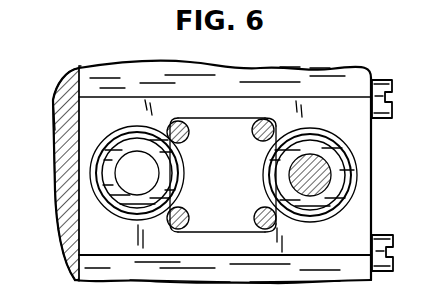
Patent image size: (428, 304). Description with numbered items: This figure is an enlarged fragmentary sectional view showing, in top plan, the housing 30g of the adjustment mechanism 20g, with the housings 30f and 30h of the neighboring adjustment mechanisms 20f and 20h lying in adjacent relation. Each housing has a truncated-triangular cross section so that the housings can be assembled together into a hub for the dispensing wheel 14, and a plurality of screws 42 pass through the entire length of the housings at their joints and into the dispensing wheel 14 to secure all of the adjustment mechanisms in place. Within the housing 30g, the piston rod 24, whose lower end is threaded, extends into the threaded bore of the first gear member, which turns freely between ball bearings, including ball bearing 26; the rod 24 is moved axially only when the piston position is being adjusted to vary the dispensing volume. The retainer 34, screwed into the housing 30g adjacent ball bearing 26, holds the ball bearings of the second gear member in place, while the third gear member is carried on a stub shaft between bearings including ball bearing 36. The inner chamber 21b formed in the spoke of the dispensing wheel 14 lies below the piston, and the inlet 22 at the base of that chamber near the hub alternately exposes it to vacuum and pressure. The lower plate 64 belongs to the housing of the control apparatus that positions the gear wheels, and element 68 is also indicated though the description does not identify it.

The dispensing wheel 14 is at (52, 151).
The adjustment mechanism 20g is at (97, 108).
The housing 30g is at (84, 127).
The adjustment mechanism 20f is at (117, 265).
The housing 30h is at (286, 72).
The adjustment mechanism 20h is at (318, 68).
The housing 30f is at (280, 266).
The inlet 22 is at (180, 292).
The inner chamber 21b is at (295, 292).
The retainer 34 is at (229, 128).
The ball bearing 36 is at (270, 180).
The ball bearing 26 is at (140, 130).
The rod 24 is at (148, 172).
The screws 42 is at (392, 84).
The lower plate 64 is at (135, 0).
The element 68 is at (427, 4).